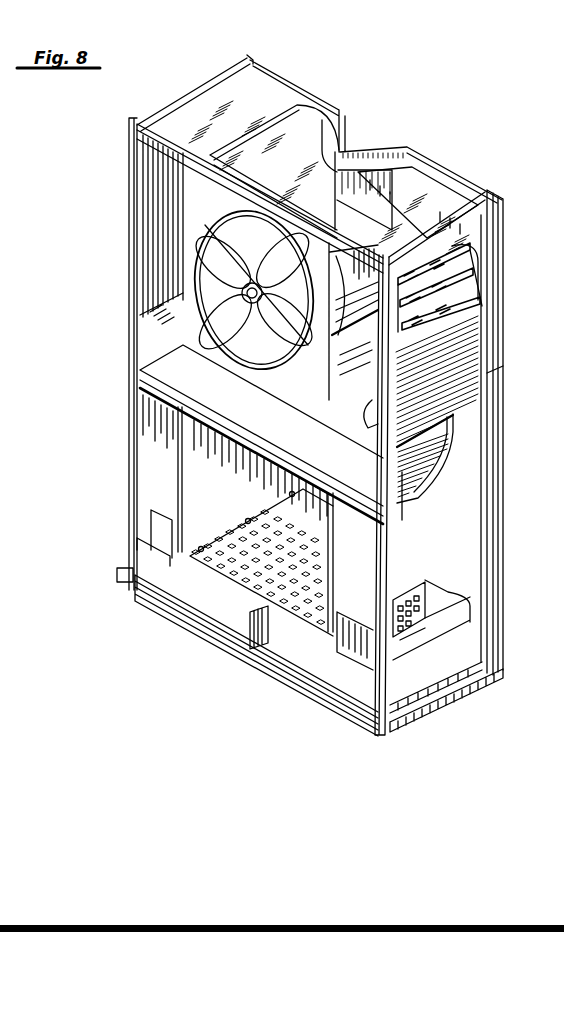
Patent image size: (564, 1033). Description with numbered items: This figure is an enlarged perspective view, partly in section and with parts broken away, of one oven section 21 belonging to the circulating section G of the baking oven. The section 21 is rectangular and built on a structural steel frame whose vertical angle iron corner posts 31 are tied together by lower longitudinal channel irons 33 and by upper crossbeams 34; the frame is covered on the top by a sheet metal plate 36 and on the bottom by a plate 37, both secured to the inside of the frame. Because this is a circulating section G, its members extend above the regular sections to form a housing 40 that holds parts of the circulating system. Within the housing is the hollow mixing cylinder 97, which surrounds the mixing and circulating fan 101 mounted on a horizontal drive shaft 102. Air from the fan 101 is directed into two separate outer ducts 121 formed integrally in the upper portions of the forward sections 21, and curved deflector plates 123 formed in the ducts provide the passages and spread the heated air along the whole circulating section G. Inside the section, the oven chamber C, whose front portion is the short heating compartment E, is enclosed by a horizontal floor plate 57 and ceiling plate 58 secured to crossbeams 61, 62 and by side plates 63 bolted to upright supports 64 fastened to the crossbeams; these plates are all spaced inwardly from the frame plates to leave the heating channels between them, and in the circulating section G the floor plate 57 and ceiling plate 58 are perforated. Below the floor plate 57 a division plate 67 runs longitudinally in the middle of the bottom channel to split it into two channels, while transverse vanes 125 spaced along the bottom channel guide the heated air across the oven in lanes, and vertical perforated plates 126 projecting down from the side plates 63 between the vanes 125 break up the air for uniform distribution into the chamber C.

The corner post 31 is at (247, 56).
The housing 40 is at (198, 112).
The upper crossbeam 34 is at (222, 174).
The outer duct 121 is at (308, 120).
The mixing and circulating fan 101 is at (224, 243).
The mixing cylinder 97 is at (280, 369).
The drive shaft 102 is at (244, 298).
The curved deflector plate 123 is at (488, 372).
The circulating section G is at (492, 371).
The oven section 21 is at (487, 432).
The top plate 36 is at (407, 423).
The crossbeam 62 is at (256, 452).
The heating compartment E is at (194, 442).
The chamber C is at (194, 469).
The upright support 64 is at (182, 457).
The side plate 63 is at (203, 480).
The floor plate 57 is at (226, 540).
The transverse vane 125 is at (163, 525).
The vertical perforated plate 126 is at (414, 585).
The ceiling plate 58 is at (400, 478).
The crossbeam 61 is at (152, 543).
The lower longitudinal channel iron 33 is at (117, 576).
The bottom plate 37 is at (213, 600).
The division plate 67 is at (257, 630).